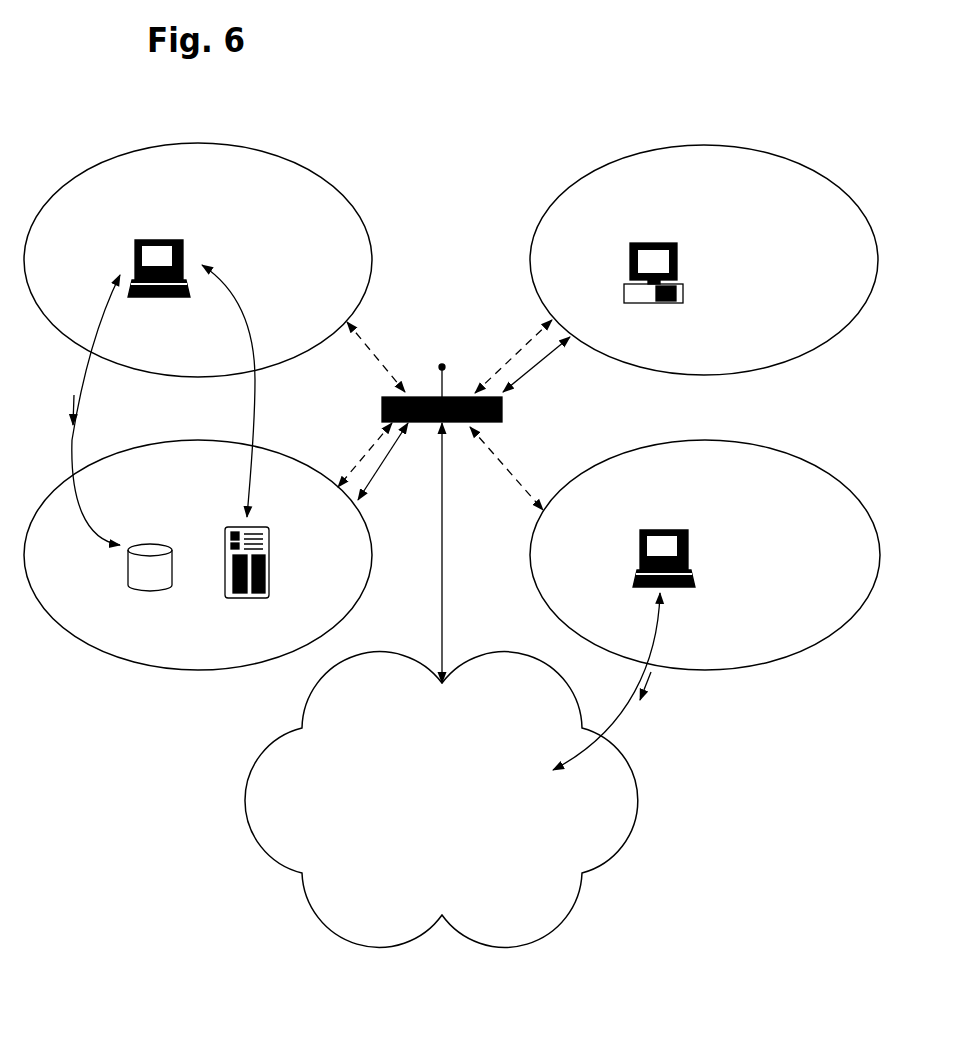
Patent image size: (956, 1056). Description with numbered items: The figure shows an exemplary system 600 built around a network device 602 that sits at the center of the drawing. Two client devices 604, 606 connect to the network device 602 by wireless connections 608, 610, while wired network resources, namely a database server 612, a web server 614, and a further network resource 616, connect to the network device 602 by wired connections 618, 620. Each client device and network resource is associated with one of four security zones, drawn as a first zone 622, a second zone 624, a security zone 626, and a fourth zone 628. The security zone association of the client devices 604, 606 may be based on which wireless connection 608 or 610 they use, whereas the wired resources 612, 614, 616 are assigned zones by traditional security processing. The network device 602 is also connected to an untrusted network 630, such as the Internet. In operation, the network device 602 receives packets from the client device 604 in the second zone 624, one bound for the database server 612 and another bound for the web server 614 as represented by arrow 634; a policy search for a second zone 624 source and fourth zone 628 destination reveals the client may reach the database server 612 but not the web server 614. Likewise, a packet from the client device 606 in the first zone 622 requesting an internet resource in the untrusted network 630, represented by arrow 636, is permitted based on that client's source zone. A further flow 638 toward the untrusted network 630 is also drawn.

The system 600 is at (477, 188).
The network device 602 is at (502, 407).
The client device 604 is at (183, 250).
The client device 606 is at (693, 553).
The wireless connection 608 is at (376, 353).
The wireless connection 610 is at (512, 474).
The database server 612 is at (147, 590).
The web server 614 is at (238, 598).
The wired network resource 616 is at (682, 265).
The wired connection 618 is at (530, 368).
The wired connection 620 is at (378, 461).
The first zone 622 is at (757, 498).
The second zone 624 is at (242, 201).
The security zone 626 is at (747, 206).
The fourth zone 628 is at (235, 498).
The untrusted network 630 is at (458, 833).
The arrow 634 is at (87, 370).
The arrow 636 is at (253, 370).
The traffic flow to untrust network 638 is at (623, 727).